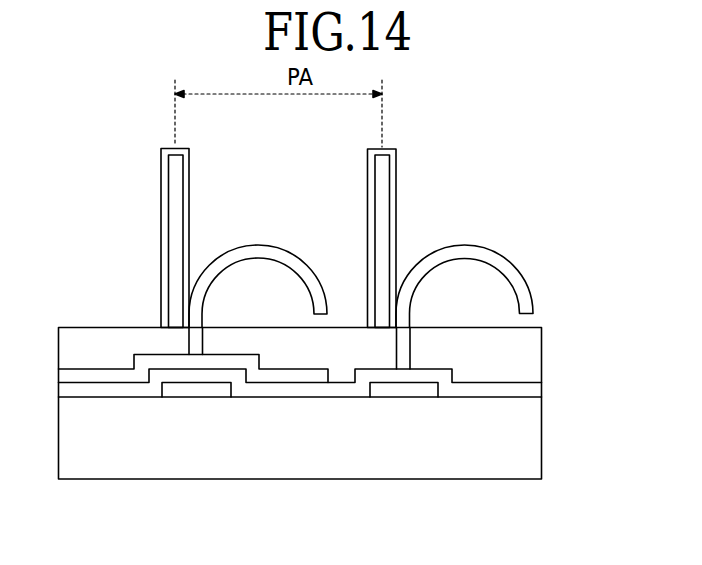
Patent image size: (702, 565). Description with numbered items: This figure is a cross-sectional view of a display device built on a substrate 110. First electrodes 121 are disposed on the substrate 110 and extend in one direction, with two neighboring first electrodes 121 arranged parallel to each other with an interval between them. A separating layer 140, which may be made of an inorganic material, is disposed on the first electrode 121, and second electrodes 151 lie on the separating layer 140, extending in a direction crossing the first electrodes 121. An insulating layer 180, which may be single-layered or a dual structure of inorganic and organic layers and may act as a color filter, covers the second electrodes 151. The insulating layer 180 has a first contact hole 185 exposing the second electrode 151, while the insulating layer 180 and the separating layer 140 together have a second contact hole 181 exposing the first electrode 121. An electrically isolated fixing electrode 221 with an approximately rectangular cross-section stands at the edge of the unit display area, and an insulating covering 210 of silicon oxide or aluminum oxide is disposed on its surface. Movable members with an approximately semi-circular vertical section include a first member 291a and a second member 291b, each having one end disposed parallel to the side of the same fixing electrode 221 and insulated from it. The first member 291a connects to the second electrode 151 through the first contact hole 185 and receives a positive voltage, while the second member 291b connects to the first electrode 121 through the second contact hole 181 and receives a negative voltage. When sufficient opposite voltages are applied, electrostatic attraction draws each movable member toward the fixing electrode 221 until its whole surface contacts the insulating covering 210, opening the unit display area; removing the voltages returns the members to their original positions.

The substrate 110 is at (272, 458).
The first electrode 121 is at (390, 388).
The separating layer 140 is at (330, 388).
The second electrode 151 is at (90, 375).
The insulating layer 180 is at (501, 353).
The second contact hole 181 is at (403, 337).
The first contact hole 185 is at (199, 337).
The insulating covering 210 is at (161, 223).
The fixing electrode 221 is at (170, 263).
The first member 291a is at (287, 249).
The second member 291b is at (493, 250).